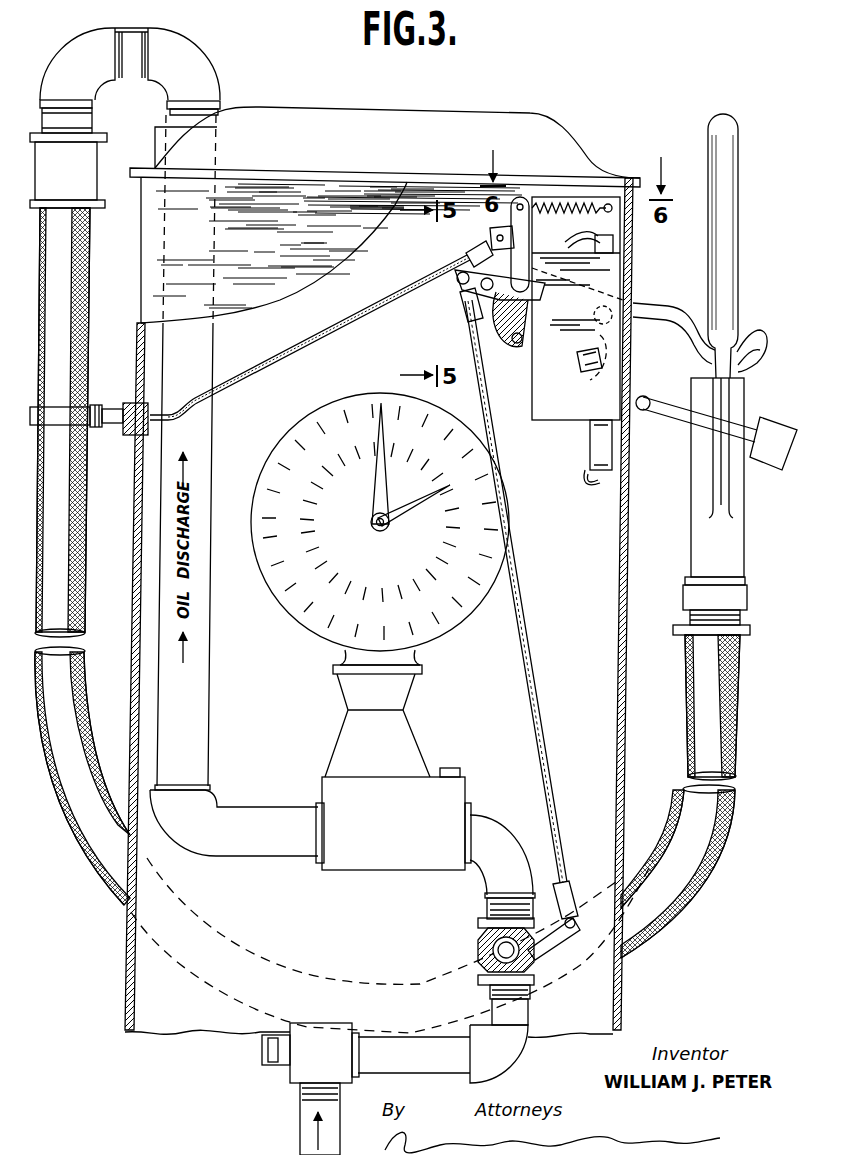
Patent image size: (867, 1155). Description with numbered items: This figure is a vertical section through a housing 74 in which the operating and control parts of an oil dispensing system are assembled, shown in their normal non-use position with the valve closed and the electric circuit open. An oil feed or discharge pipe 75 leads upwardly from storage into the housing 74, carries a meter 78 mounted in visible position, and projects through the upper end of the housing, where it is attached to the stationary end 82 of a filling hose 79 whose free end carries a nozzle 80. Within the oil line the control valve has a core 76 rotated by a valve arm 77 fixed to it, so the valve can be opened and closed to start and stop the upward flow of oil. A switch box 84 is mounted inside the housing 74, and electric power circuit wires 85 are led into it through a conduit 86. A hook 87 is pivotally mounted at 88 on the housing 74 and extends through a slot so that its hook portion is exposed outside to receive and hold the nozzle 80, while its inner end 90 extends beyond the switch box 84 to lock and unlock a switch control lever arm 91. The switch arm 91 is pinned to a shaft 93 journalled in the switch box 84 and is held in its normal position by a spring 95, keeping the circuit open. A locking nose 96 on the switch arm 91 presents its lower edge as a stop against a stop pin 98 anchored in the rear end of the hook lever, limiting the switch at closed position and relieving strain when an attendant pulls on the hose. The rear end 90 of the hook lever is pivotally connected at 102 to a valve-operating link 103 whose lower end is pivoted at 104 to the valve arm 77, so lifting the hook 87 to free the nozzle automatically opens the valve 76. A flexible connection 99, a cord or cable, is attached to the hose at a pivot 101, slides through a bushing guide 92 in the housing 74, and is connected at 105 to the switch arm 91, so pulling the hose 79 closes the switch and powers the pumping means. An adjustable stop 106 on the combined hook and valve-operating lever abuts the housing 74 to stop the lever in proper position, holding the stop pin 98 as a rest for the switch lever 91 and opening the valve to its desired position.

The housing 74 is at (398, 122).
The oil feed or discharge pipe 75 is at (131, 70).
The control valve core 76 is at (480, 958).
The valve arm 77 is at (553, 942).
The meter 78 is at (310, 625).
The filling hose 79 is at (72, 814).
The nozzle 80 is at (732, 247).
The stationary end of filling hose 82 is at (68, 204).
The switch box 84 is at (550, 420).
The electric power circuit wires 85 is at (575, 238).
The conduit 86 is at (613, 245).
The hook 87 is at (745, 340).
The pivot 88 is at (606, 308).
The inner end of hook lever 90 is at (470, 258).
The switch control lever arm 91 is at (522, 198).
The bushing guide 92 is at (132, 400).
The shaft 93 is at (517, 345).
The spring 95 is at (592, 200).
The locking nose 96 is at (483, 292).
The stop pin 98 is at (468, 303).
The flexible connection 99 is at (314, 335).
The pivot 101 is at (100, 430).
The pivot 102 is at (458, 283).
The valve-operating link 103 is at (522, 585).
The pivot 104 is at (572, 890).
The connection 105 is at (492, 236).
The adjustable stop 106 is at (598, 372).